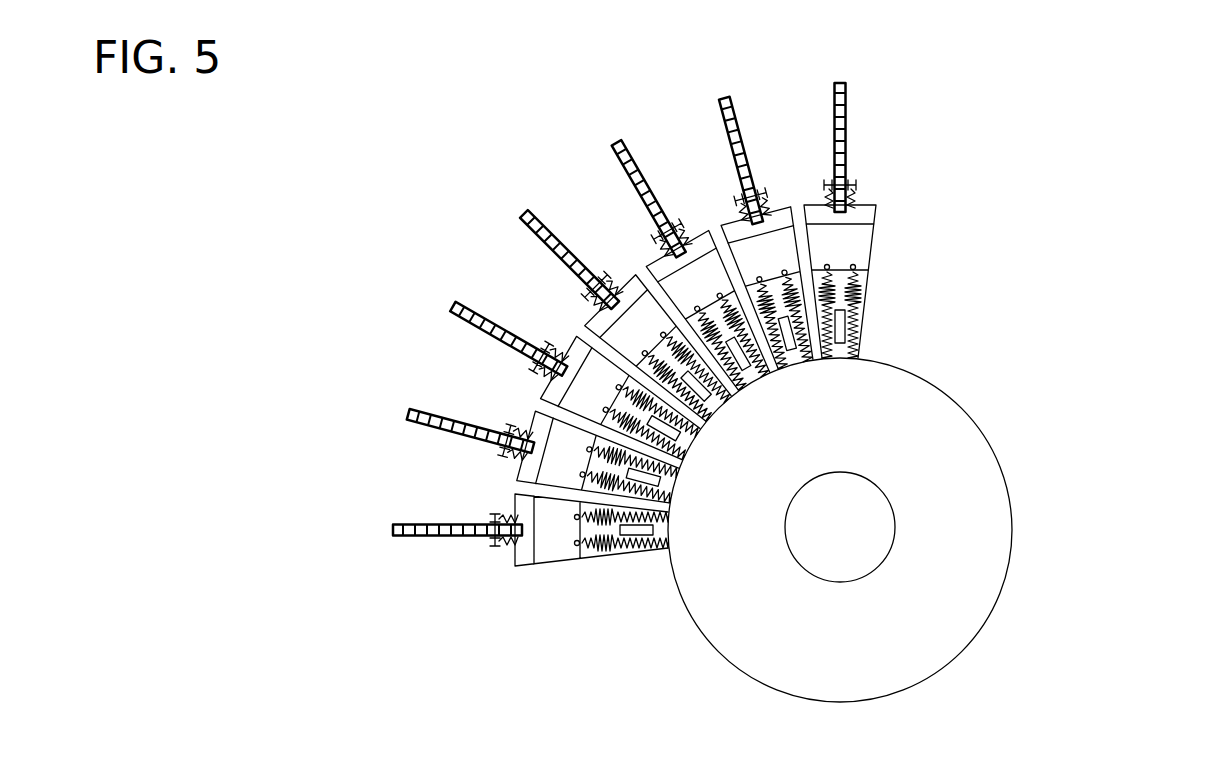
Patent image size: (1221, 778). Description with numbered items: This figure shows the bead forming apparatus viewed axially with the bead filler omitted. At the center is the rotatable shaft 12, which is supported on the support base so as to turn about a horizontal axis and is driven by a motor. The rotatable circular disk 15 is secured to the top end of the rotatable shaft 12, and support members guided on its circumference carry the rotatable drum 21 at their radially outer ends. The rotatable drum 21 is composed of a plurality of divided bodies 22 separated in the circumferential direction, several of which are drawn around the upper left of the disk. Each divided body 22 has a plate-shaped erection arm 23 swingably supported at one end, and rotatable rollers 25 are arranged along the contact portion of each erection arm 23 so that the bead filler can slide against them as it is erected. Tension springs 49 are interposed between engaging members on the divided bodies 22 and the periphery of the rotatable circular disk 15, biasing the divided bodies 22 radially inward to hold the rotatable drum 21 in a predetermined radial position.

The rotatable shaft 12 is at (828, 545).
The rotatable circular disk 15 is at (993, 535).
The rotatable drum 21 is at (626, 270).
The divided body 22 is at (870, 227).
The erection arm 23 is at (843, 147).
The rotatable roller 25 is at (745, 136).
The tension spring 49 is at (856, 338).